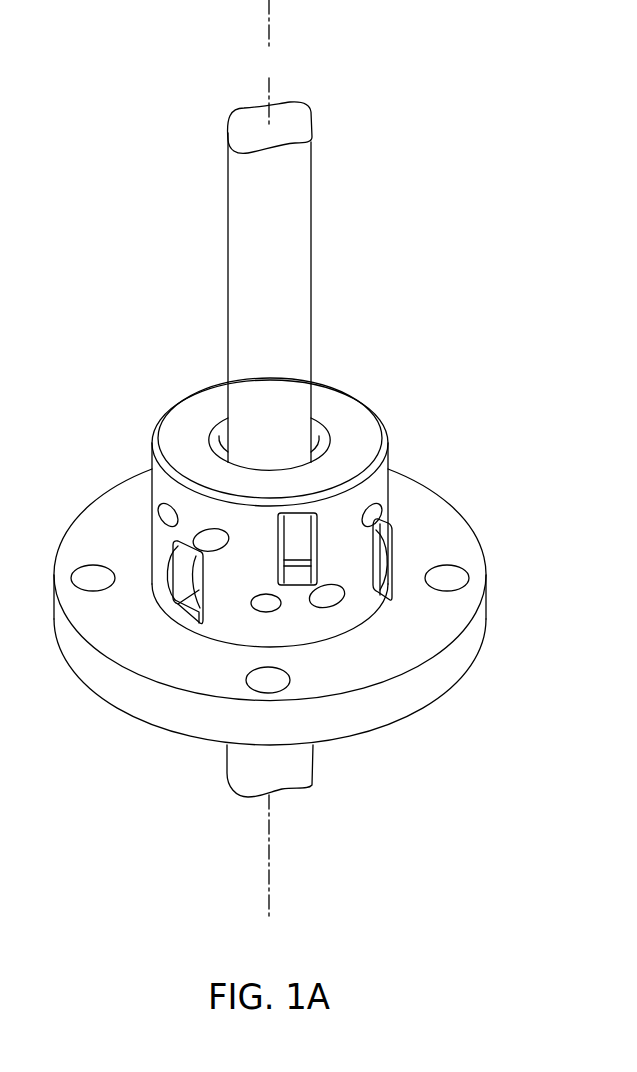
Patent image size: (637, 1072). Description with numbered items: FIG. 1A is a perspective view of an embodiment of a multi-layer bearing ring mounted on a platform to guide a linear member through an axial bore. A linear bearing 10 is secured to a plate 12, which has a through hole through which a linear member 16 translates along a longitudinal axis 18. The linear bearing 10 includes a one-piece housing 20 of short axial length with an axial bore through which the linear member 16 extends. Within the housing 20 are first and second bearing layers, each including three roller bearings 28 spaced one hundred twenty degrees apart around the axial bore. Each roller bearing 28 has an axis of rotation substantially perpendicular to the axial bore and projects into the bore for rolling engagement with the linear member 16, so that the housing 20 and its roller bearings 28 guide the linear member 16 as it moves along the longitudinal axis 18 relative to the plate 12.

The linear bearing 10 is at (366, 387).
The plate 12 is at (122, 688).
The linear member 16 is at (312, 296).
The longitudinal axis 18 is at (268, 62).
The housing 20 is at (204, 410).
The roller bearings 28 is at (306, 547).